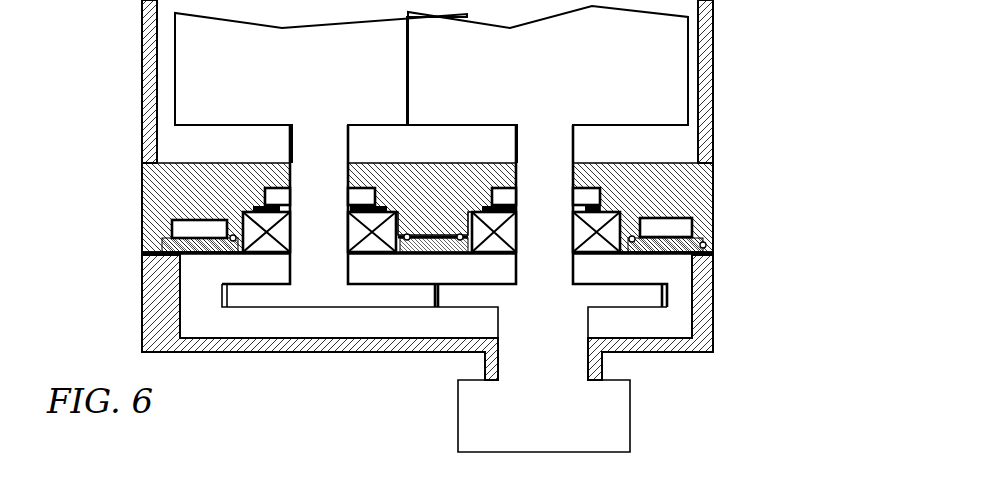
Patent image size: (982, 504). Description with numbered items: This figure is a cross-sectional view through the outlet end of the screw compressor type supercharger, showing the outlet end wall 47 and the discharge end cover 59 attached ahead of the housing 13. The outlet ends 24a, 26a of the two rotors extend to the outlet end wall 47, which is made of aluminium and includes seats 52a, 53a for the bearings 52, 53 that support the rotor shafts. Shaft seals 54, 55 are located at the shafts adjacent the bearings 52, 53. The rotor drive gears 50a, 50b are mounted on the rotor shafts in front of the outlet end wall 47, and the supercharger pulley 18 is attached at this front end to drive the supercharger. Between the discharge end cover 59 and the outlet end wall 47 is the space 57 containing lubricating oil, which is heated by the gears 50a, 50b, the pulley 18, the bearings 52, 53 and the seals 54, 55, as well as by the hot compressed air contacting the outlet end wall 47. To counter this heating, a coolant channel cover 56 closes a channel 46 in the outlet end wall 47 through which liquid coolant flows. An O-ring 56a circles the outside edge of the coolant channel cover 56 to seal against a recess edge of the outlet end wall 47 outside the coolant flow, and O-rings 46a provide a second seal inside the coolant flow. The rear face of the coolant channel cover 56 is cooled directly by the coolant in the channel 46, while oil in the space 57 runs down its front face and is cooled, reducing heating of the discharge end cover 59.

The housing 13 is at (705, 125).
The supercharger pulley 18 is at (607, 423).
The outlet end of rotor 24a is at (299, 82).
The outlet end of rotor 26a is at (532, 85).
The channel 46 is at (188, 230).
The O-rings 46a is at (233, 241).
The outlet end wall 47 is at (697, 190).
The rotor drive gear 50a is at (280, 298).
The rotor drive gear 50b is at (460, 310).
The bearing 52 is at (610, 212).
The seat 52a is at (465, 225).
The bearing 53 is at (253, 230).
The seat 53a is at (240, 217).
The shaft seal 54 is at (598, 200).
The shaft seal 55 is at (272, 202).
The coolant channel cover 56 is at (165, 255).
The O-ring 56a is at (708, 245).
The space 57 is at (345, 334).
The discharge end cover 59 is at (703, 305).